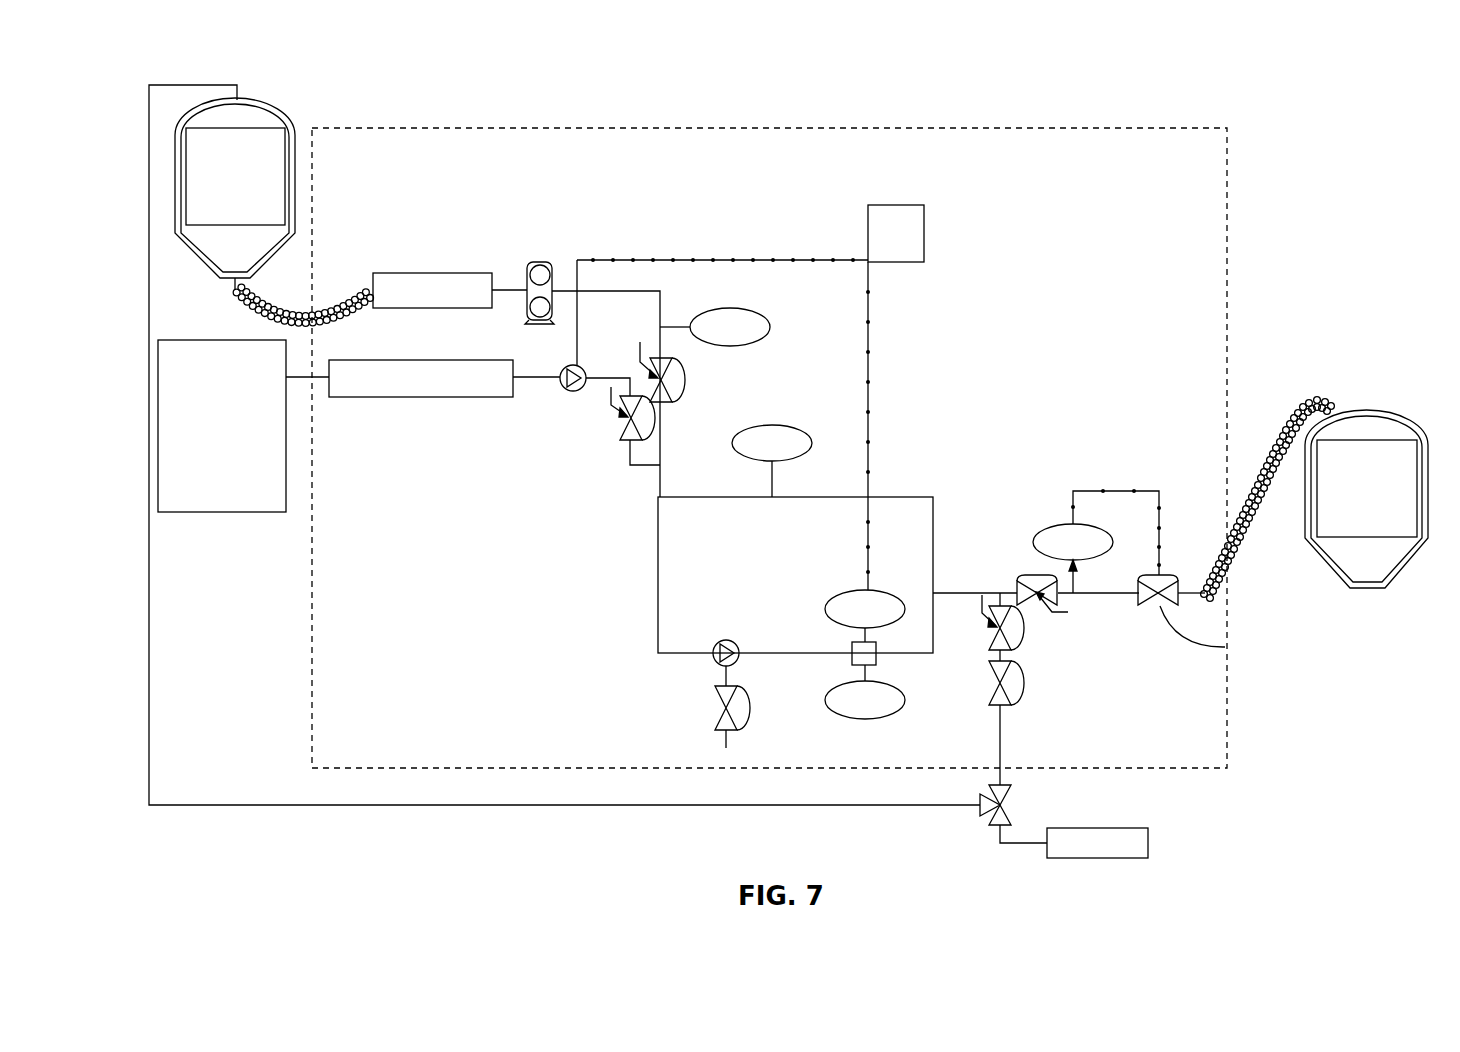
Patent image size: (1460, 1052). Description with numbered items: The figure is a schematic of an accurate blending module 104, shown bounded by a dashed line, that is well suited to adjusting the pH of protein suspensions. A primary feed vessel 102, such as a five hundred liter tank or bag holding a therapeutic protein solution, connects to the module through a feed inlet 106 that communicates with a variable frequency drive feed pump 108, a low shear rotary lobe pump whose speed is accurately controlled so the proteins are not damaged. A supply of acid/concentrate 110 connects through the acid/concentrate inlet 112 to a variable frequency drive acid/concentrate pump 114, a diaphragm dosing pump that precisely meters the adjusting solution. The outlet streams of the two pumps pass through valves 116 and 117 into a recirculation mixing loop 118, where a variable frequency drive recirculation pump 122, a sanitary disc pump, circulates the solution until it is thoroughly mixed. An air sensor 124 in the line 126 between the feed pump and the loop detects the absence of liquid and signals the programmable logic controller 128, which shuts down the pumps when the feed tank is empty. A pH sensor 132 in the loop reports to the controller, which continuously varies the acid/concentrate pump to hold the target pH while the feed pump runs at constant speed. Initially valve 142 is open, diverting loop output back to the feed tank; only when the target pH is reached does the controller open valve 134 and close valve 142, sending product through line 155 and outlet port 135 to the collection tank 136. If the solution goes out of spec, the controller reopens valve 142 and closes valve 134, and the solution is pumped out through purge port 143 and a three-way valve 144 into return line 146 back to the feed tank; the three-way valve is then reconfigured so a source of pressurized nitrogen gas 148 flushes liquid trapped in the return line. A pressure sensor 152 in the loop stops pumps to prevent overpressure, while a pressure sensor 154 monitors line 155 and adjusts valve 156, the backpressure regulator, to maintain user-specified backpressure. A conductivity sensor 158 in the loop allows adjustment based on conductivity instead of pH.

The primary feed vessel 102 is at (264, 96).
The accurate blending module 104 is at (362, 126).
The feed inlet 106 is at (432, 272).
The feed pump 108 is at (522, 274).
The acid/concentrate 110 is at (222, 512).
The acid/concentrate inlet 112 is at (422, 398).
The acid/concentrate pump 114 is at (569, 365).
The valve 116 is at (683, 378).
The valve 117 is at (618, 438).
The recirculation mixing loop 118 is at (658, 595).
The recirculation pump 122 is at (712, 660).
The air sensor 124 is at (730, 306).
The line 126 is at (622, 290).
The programmable logic controller 128 is at (924, 232).
The pH sensor 132 is at (853, 592).
The valve 134 is at (1037, 575).
The outlet port 135 is at (1210, 597).
The collection tank 136 is at (1368, 408).
The valve 142 is at (1022, 630).
The purge port 143 is at (1000, 765).
The three-way valve 144 is at (990, 822).
The return line 146 is at (662, 806).
The source of pressurized nitrogen gas 148 is at (1098, 860).
The pressure sensor 152 is at (770, 425).
The pressure sensor 154 is at (1063, 524).
The line 155 is at (1083, 595).
The valve 156 is at (1168, 576).
The conductivity sensor 158 is at (862, 722).